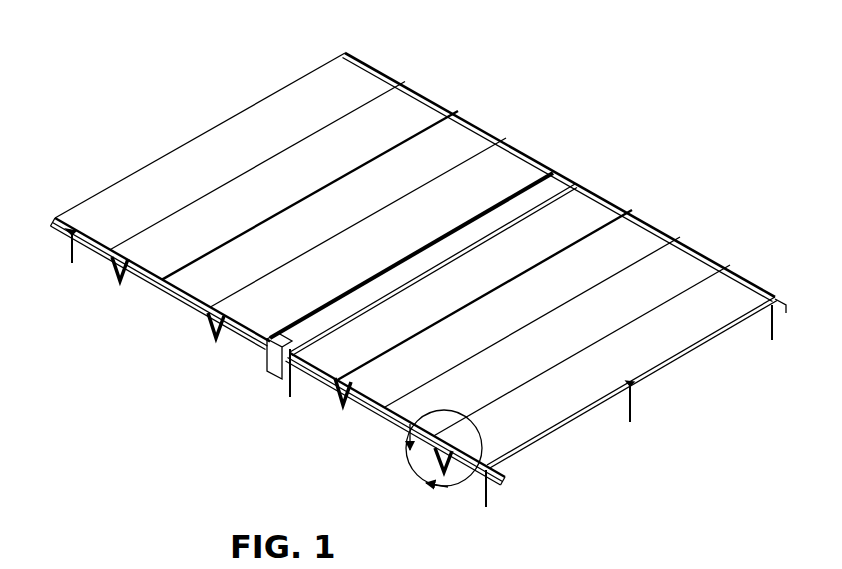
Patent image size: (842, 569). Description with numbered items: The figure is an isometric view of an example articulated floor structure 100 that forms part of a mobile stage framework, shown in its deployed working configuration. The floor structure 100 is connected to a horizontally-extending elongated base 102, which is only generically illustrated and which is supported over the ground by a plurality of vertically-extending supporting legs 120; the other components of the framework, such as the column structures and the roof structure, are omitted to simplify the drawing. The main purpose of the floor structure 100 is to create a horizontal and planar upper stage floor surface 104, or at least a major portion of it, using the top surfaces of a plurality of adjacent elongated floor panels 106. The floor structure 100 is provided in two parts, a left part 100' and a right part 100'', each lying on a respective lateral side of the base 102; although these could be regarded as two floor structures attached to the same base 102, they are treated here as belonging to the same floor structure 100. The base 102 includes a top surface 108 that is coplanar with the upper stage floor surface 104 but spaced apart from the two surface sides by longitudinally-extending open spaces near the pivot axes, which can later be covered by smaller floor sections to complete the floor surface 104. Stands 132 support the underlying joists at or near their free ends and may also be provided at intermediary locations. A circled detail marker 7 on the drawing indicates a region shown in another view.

The modular surface assembly 100 is at (443, 253).
The first panel 100' is at (307, 198).
The second panel 100'' is at (536, 329).
The connector 102 is at (268, 355).
The panel deck 104 is at (200, 165).
The ribs 106 is at (348, 135).
The joint between panels 108 is at (563, 171).
The intermediate support post 120 is at (289, 380).
The support legs 132 is at (73, 265).
The detail view indicator 7 is at (439, 448).